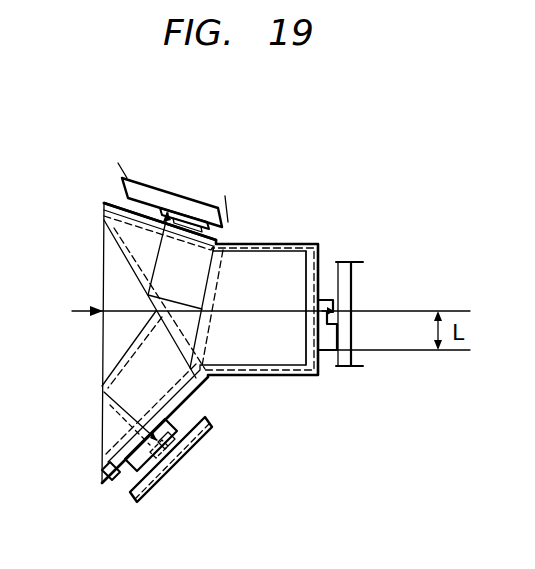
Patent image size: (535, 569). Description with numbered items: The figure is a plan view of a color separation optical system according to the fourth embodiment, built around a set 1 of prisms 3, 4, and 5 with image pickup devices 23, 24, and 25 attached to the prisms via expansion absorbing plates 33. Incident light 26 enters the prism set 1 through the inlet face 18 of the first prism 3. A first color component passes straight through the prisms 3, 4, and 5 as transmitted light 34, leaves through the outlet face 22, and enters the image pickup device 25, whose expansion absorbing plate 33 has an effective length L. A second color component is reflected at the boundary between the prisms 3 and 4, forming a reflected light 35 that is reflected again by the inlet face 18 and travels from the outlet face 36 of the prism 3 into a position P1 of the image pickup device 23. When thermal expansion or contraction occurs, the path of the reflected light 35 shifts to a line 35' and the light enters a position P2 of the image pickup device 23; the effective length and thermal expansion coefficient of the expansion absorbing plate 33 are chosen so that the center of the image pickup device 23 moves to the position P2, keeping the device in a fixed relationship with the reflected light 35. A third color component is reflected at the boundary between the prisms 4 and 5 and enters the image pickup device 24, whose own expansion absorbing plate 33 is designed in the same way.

The prism set 1 is at (270, 256).
The first prism 3 is at (102, 452).
The prism 4 is at (104, 207).
The prism 5 is at (307, 252).
The inlet face 18 is at (102, 271).
The outlet face 22 is at (307, 265).
The image pickup device 23 is at (213, 427).
The image pickup device 24 is at (207, 208).
The image pickup device 25 is at (350, 289).
The incident light 26 is at (75, 311).
The expansion absorbing plate 33 is at (326, 352).
The transmitted light 34 is at (287, 312).
The reflected light 35 is at (107, 408).
The line 35' is at (104, 424).
The outlet face 36 is at (112, 470).
The position P1 is at (173, 450).
The position P2 is at (162, 455).